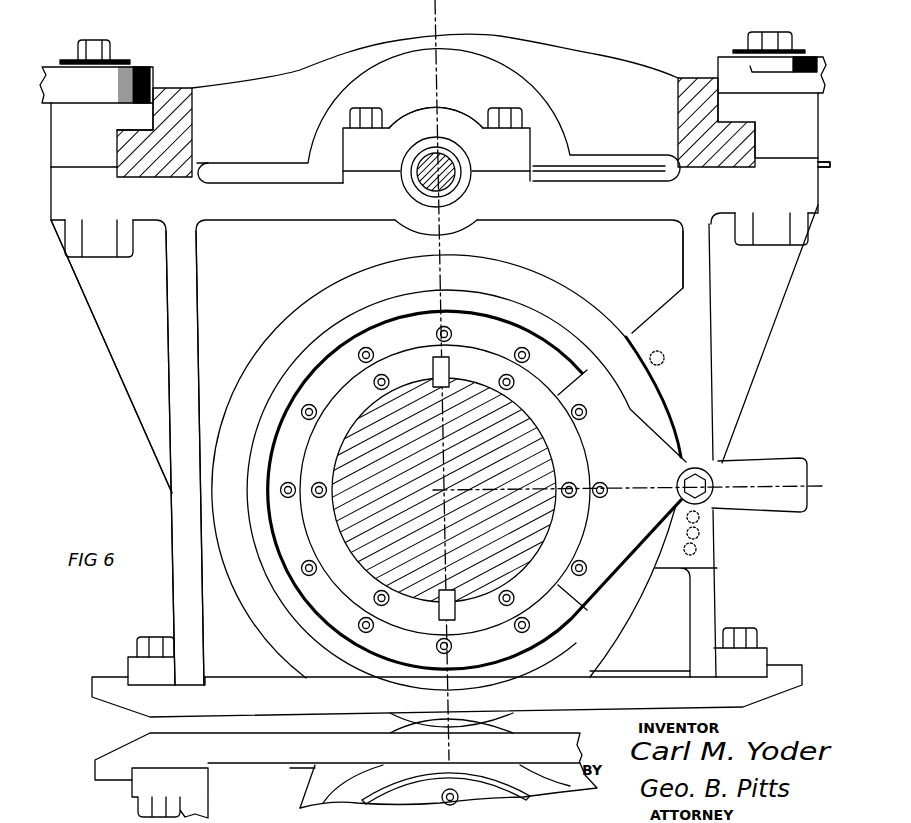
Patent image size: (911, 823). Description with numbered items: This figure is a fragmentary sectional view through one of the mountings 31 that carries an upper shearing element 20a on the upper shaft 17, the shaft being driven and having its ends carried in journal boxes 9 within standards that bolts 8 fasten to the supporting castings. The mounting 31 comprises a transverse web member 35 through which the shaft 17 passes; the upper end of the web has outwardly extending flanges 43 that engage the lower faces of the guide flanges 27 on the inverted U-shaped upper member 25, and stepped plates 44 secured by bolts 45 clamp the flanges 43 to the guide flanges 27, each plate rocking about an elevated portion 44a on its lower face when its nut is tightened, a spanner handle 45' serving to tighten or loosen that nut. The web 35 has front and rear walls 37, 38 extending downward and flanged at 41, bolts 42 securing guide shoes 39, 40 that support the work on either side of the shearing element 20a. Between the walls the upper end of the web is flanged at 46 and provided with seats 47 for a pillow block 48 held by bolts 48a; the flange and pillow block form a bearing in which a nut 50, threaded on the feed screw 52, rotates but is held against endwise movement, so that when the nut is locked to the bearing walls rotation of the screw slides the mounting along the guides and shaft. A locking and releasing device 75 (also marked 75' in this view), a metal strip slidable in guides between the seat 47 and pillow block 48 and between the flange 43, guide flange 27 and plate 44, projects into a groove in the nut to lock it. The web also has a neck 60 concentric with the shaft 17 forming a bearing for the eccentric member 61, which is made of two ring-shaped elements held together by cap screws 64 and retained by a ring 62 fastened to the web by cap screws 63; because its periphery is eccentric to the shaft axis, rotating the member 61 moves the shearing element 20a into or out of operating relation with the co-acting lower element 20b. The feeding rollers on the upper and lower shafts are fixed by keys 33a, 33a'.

The bolts 8 is at (452, 13).
The upper journal boxes 9 is at (626, 489).
The upper shaft 17 is at (410, 403).
The upper shearing element 20a is at (306, 305).
The lower shearing element 20b is at (300, 793).
The upper member 25 is at (253, 98).
The guide flanges 27 is at (133, 152).
The mounting 31 is at (178, 527).
The key 33a is at (477, 624).
The key 33a' is at (474, 353).
The transverse web member 35 is at (260, 257).
The front wall 37 is at (182, 348).
The rear wall 38 is at (695, 267).
The guide shoe 39 is at (148, 755).
The guide shoe 40 is at (763, 683).
The flanges 41 is at (140, 672).
The bolts 42 is at (153, 645).
The flanges 43 is at (147, 208).
The stepped plates 44 is at (143, 113).
The off-set or elevated portion 44a is at (73, 163).
The bolts 45 is at (111, 356).
The handle 45' is at (770, 334).
The flange 46 is at (378, 208).
The seats 47 is at (358, 175).
The pillow block 48 is at (405, 128).
The bolts 48a is at (355, 122).
The nut 50 is at (455, 193).
The feed screw 52 is at (455, 165).
The wall or neck 60 is at (570, 560).
The member 61 is at (318, 585).
The ring 62 is at (345, 575).
The cap screws 63 is at (383, 607).
The cap screws 64 is at (305, 407).
The locking and releasing device 75 is at (681, 149).
The shim tab 75' is at (815, 234).